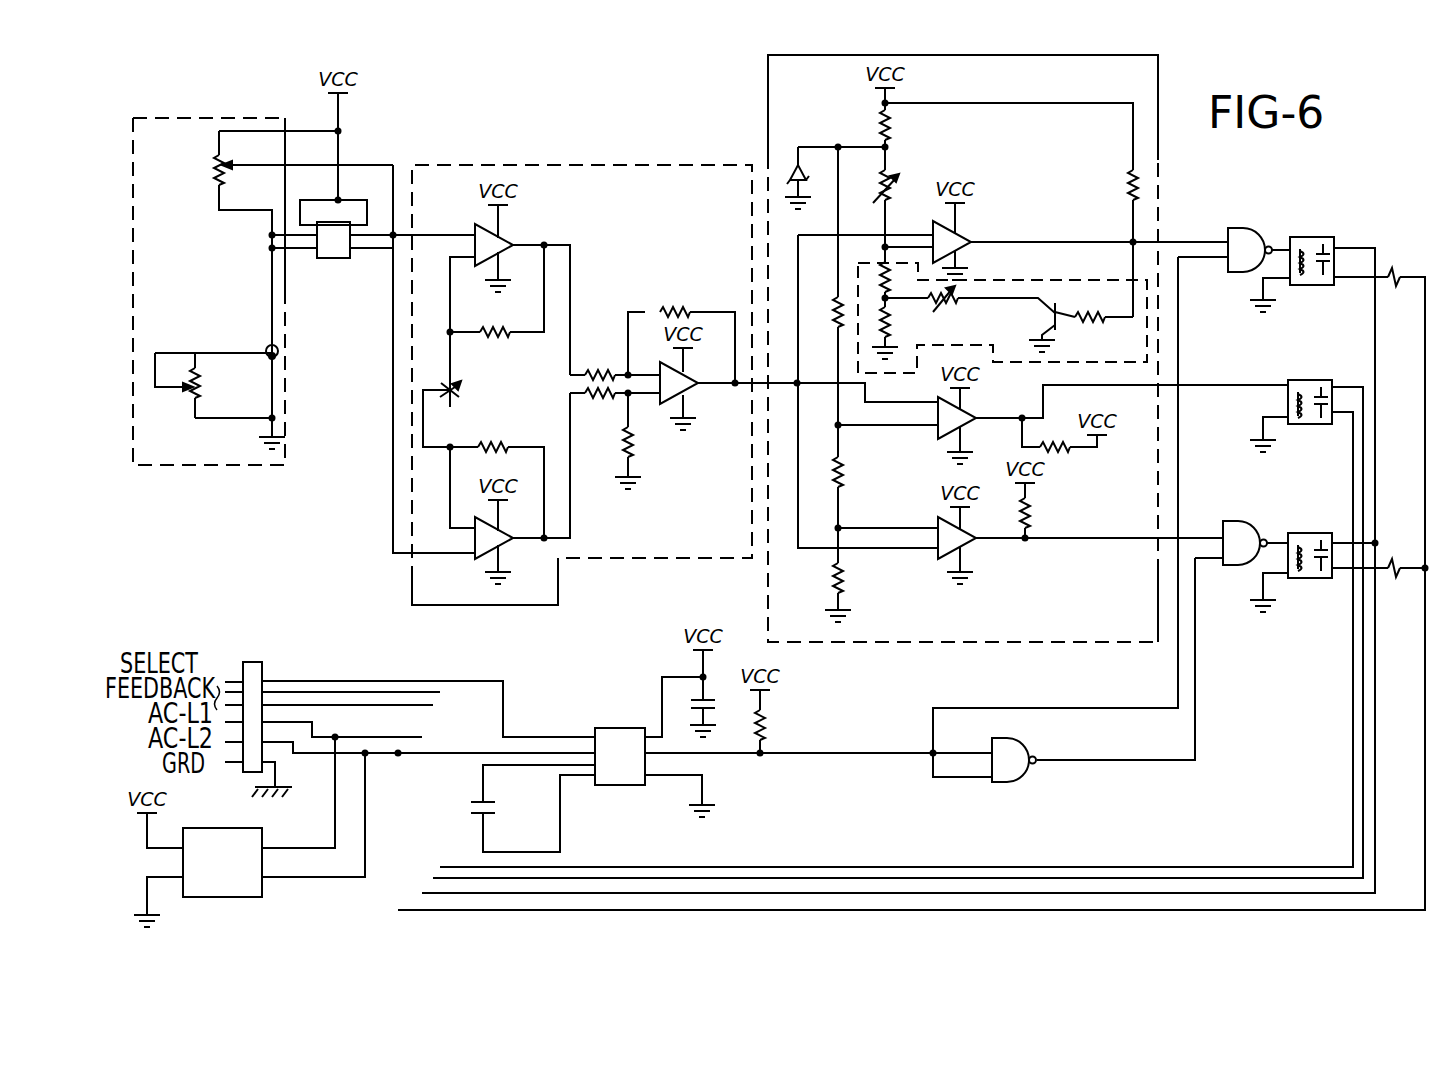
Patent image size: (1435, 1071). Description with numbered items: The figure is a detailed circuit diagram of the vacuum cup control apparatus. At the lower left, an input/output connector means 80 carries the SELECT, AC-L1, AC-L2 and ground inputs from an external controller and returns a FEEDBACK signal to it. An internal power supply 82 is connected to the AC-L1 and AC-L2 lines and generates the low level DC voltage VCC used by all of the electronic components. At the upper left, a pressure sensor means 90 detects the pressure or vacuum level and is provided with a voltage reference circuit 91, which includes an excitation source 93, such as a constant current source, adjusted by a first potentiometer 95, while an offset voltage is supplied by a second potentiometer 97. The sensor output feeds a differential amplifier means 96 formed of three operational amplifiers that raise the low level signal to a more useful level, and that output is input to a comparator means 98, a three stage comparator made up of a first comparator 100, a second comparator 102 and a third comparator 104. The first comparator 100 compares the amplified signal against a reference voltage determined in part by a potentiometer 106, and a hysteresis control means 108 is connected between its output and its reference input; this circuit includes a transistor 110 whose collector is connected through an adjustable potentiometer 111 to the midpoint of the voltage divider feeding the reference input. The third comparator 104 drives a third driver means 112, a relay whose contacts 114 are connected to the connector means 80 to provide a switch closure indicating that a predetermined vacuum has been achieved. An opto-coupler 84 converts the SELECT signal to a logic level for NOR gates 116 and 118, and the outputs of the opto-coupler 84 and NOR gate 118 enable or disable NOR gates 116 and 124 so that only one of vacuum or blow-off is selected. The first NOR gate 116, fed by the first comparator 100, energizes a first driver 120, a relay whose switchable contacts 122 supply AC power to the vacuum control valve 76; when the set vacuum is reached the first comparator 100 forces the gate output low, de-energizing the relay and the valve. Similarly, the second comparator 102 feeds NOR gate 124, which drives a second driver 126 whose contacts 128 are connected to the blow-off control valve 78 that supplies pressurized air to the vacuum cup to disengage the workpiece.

The vacuum control valve 76 is at (1400, 270).
The blow-off control valve 78 is at (1392, 566).
The input/output connector means 80 is at (262, 664).
The internal power supply 82 is at (237, 888).
The opto-coupler 84 is at (612, 784).
The pressure sensor means 90 is at (336, 260).
The voltage reference circuit 91 is at (184, 90).
The excitation source 93 is at (281, 352).
The first potentiometer 95 is at (198, 366).
The differential amplifier means 96 is at (598, 141).
The second potentiometer 97 is at (211, 171).
The comparator means 98 is at (795, 121).
The first comparator 100 is at (958, 236).
The second comparator 102 is at (948, 556).
The third comparator 104 is at (948, 432).
The potentiometer 106 is at (895, 176).
The hysteresis control means 108 is at (1085, 314).
The transistor 110 is at (1052, 333).
The adjustable potentiometer 111 is at (943, 308).
The third driver means 112 is at (1297, 406).
The contacts 114 is at (1312, 425).
The first NOR gate 116 is at (1233, 230).
The NOR gate 118 is at (1010, 772).
The first driver 120 is at (1321, 239).
The switchable contacts 122 is at (1324, 282).
The NOR gate 124 is at (1248, 525).
The second driver 126 is at (1308, 580).
The switchable contacts 128 is at (1318, 562).